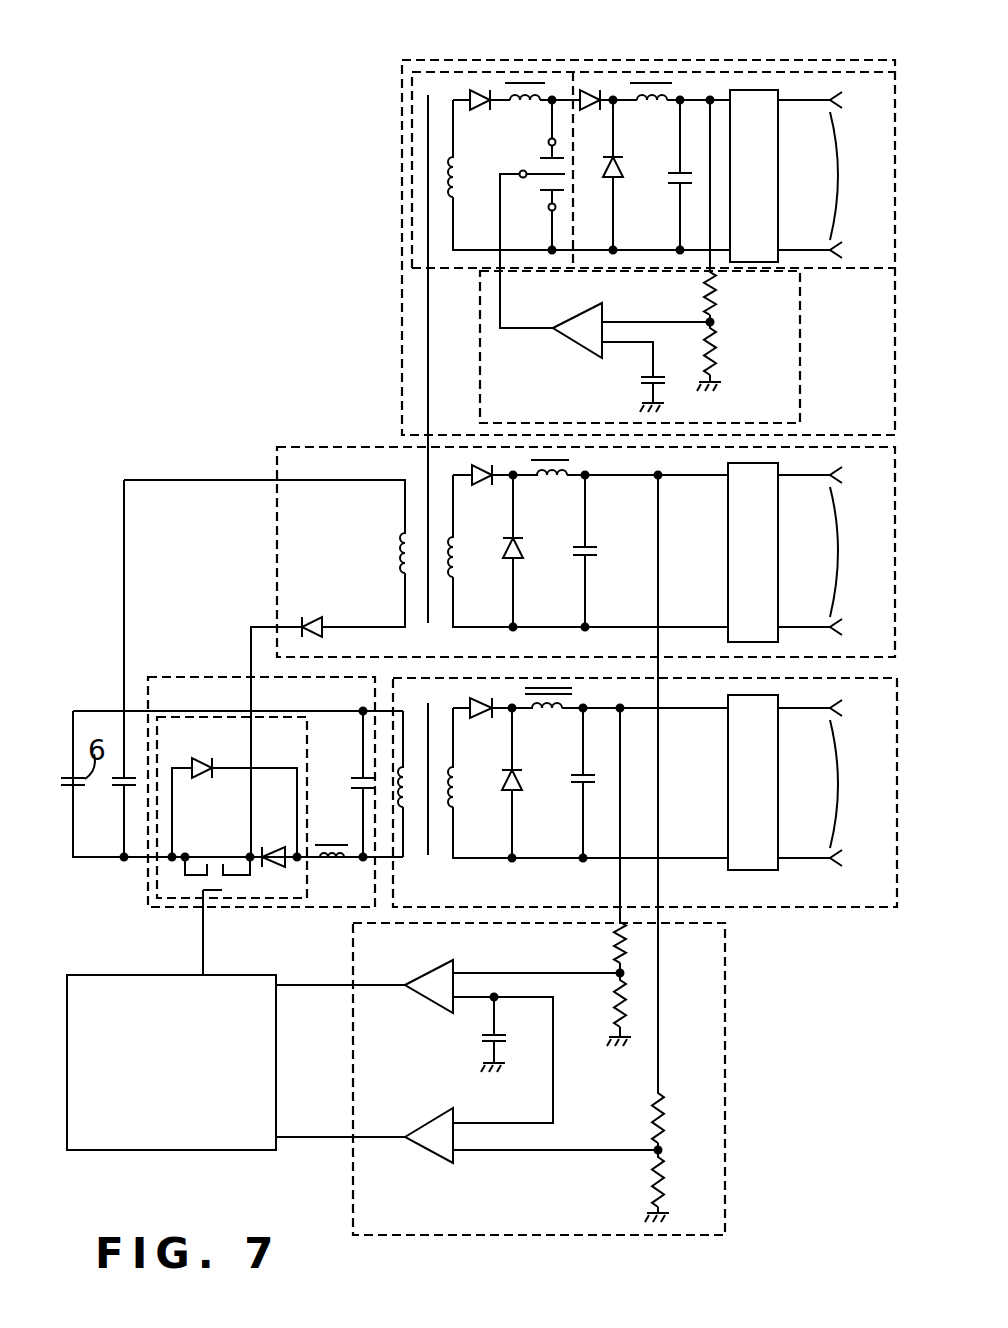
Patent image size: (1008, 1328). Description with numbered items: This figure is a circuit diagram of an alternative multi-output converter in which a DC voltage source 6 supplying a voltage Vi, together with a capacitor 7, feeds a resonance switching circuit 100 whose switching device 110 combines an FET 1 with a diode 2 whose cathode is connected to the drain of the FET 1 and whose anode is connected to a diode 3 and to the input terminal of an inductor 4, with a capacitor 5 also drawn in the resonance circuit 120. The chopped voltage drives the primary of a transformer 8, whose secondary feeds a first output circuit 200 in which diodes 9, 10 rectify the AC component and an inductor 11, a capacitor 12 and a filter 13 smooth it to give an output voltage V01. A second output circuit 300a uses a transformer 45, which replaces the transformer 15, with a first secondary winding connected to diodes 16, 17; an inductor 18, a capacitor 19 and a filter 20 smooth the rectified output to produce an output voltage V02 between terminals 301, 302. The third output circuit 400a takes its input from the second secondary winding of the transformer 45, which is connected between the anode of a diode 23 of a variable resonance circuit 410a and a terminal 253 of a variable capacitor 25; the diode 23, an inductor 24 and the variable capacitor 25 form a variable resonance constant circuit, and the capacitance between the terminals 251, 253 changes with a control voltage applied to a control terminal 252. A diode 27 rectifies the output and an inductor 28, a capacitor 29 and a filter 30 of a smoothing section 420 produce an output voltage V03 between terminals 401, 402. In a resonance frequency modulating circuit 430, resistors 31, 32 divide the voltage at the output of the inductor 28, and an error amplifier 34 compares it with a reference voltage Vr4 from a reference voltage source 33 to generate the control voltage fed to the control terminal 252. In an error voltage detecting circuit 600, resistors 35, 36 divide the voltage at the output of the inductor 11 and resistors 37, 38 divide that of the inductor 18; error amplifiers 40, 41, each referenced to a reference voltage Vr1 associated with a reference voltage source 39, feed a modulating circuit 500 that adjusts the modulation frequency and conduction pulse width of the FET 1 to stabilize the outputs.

The FET 1 is at (186, 856).
The diode 2 is at (286, 852).
The diode 3 is at (196, 760).
The inductor 4 is at (331, 860).
The capacitor 5 is at (351, 776).
The DC voltage source 6 is at (597, 116).
The capacitor 7 is at (121, 790).
The transformer 8 is at (427, 730).
The diode 9 is at (481, 716).
The diode 10 is at (512, 792).
The inductor 11 is at (549, 714).
The capacitor 12 is at (578, 783).
The filter 13 is at (779, 808).
The transformer 15 is at (325, 623).
The diode 16 is at (483, 485).
The diode 17 is at (512, 560).
The inductor 18 is at (549, 482).
The capacitor 19 is at (580, 551).
The filter 20 is at (779, 578).
The diode 23 is at (480, 95).
The inductor 24 is at (553, 45).
The variable capacitor 25 is at (520, 176).
The diode 27 is at (603, 174).
The inductor 28 is at (651, 112).
The capacitor 29 is at (670, 180).
The filter 30 is at (779, 200).
The resistor 31 is at (715, 290).
The resistor 32 is at (715, 350).
The reference voltage source 33 is at (640, 381).
The error amplifier 34 is at (562, 342).
The resistor 35 is at (615, 945).
The resistor 36 is at (623, 1006).
The resistor 37 is at (653, 1120).
The resistor 38 is at (652, 1176).
The reference voltage source 39 is at (478, 1040).
The error amplifier 40 is at (436, 972).
The error amplifier 41 is at (441, 1160).
The transformer 45 is at (428, 473).
The resonance switching circuit 100 is at (148, 880).
The switching device 110 is at (185, 707).
The resonance circuit 120 is at (320, 907).
The first output circuit 200 is at (787, 909).
The terminal 251 is at (548, 140).
The control terminal 252 is at (521, 171).
The terminal 253 is at (550, 210).
The second output circuit 300a is at (277, 512).
The terminal 301 is at (882, 478).
The terminal 302 is at (882, 630).
The third output circuit 400a is at (400, 140).
The terminal 401 is at (882, 114).
The terminal 402 is at (882, 262).
The variable resonance circuit 410a is at (455, 268).
The smoothing circuit 420 is at (642, 72).
The resonance frequency modulating circuit 430 is at (480, 355).
The modulating circuit 500 is at (200, 1152).
The error voltage detecting circuit 600 is at (727, 1100).
The DC voltage Vi is at (73, 732).
The reference voltage Vr1 is at (488, 1012).
The reference voltage Vr4 is at (660, 342).
The output voltage V01 is at (864, 784).
The output voltage V02 is at (864, 552).
The output voltage V03 is at (864, 176).